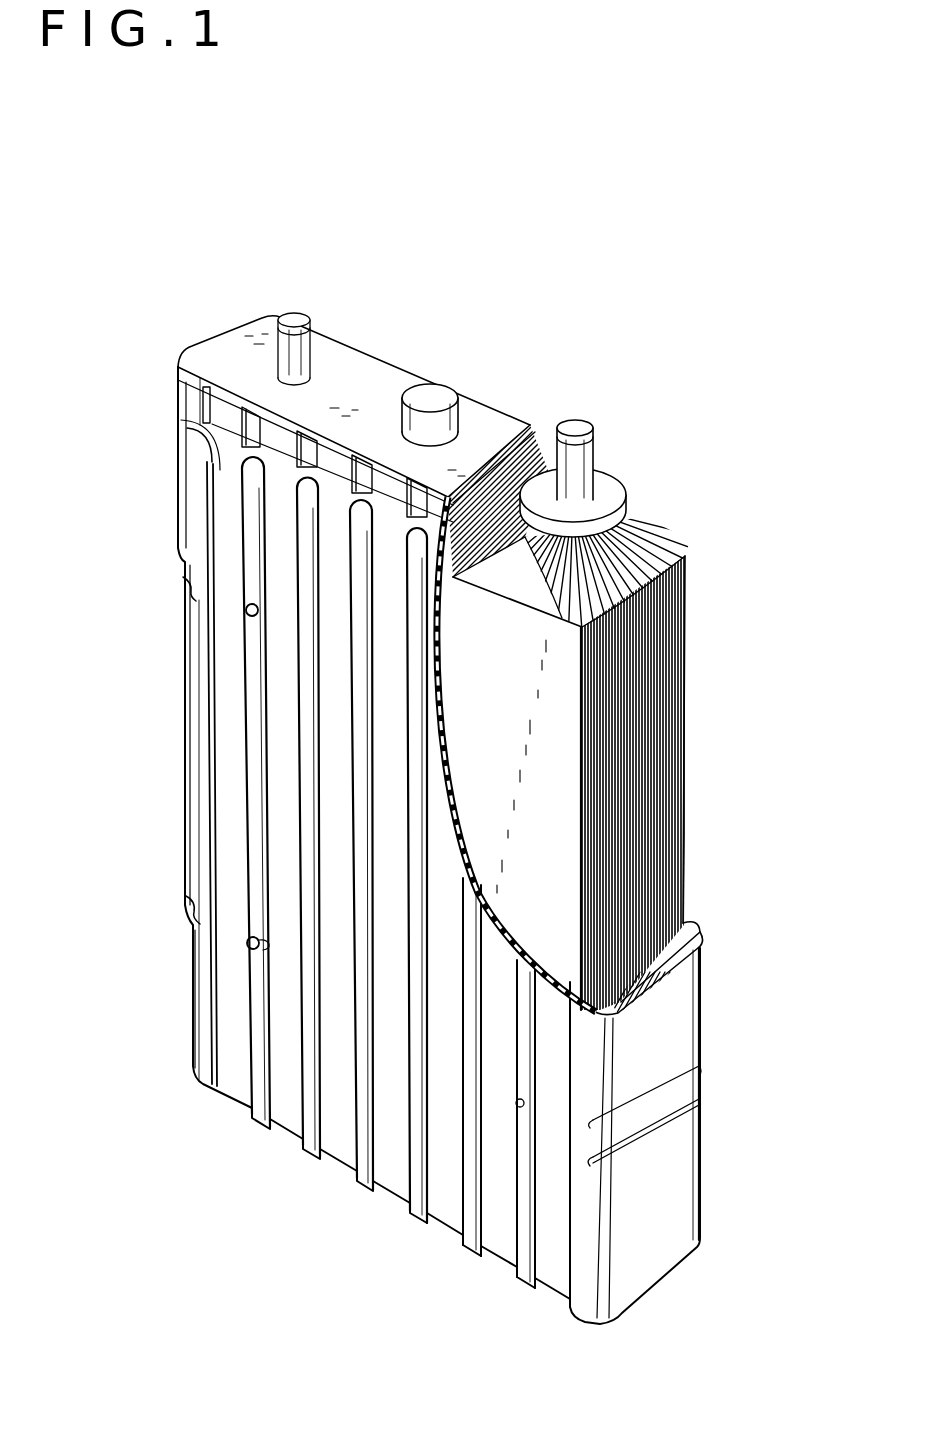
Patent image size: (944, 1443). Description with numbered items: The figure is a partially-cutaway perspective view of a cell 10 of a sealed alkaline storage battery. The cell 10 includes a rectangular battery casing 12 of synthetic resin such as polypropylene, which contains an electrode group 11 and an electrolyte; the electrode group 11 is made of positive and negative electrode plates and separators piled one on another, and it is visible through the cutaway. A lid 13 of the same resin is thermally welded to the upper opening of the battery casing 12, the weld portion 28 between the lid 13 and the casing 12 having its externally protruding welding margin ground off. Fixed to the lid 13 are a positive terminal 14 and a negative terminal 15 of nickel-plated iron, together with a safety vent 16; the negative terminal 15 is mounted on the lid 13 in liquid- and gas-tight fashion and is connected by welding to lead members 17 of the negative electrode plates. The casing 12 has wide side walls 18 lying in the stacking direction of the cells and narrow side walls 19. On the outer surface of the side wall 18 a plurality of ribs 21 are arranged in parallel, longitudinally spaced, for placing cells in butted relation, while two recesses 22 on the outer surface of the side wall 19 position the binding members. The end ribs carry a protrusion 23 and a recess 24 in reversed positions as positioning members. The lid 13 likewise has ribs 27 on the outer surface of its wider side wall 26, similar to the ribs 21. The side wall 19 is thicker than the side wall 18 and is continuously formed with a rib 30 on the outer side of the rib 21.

The cell 10 is at (156, 368).
The electrode group 11 is at (650, 647).
The battery casing 12 is at (184, 513).
The lid 13 is at (365, 366).
The positive terminal 14 is at (294, 318).
The negative terminal 15 is at (572, 420).
The safety vent 16 is at (448, 394).
The lead members 17 is at (548, 579).
The wide side wall 18 is at (283, 1003).
The narrow side wall 19 is at (663, 1027).
The ribs 21 is at (255, 776).
The recesses 22 is at (648, 1113).
The protrusion 23 is at (246, 611).
The recess 24 is at (250, 938).
The wider side wall 26 is at (272, 408).
The ribs 27 is at (204, 402).
The weld portion 28 is at (183, 446).
The rib 30 is at (196, 672).